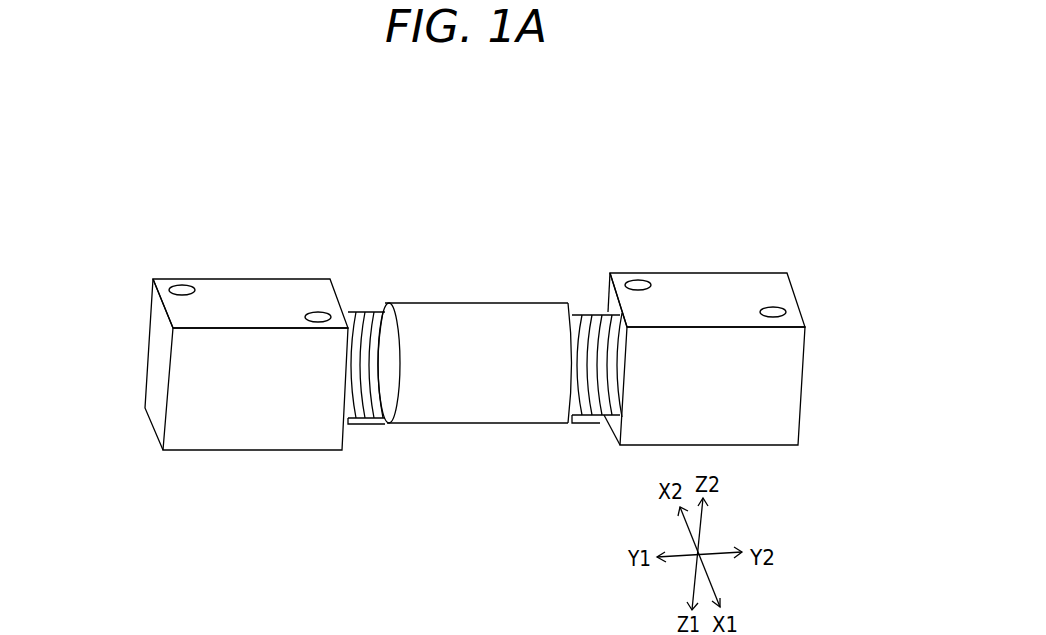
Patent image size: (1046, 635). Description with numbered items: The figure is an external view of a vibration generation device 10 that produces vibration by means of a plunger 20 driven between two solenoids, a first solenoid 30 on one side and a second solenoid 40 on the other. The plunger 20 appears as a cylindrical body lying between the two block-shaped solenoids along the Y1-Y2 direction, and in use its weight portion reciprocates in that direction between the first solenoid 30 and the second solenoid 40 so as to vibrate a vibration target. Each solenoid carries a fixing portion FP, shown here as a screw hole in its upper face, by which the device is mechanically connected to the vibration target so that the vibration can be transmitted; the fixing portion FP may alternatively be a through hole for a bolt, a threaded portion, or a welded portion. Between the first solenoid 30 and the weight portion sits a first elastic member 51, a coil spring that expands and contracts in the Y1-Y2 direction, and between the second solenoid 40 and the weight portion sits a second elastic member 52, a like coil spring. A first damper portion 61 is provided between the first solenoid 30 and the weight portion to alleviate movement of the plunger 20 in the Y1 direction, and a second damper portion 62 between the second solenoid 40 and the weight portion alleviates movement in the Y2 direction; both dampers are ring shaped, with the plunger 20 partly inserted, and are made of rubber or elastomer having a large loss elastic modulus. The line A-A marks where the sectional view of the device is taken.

The vibration generation device 10 is at (150, 152).
The plunger 20 is at (477, 305).
The first solenoid 30 is at (258, 292).
The second solenoid 40 is at (703, 285).
The first elastic member 51 is at (368, 424).
The second elastic member 52 is at (588, 424).
The first damper portion 61 is at (350, 310).
The second damper portion 62 is at (603, 313).
The fixing portion FP is at (184, 288).
The line A- A is at (135, 355).